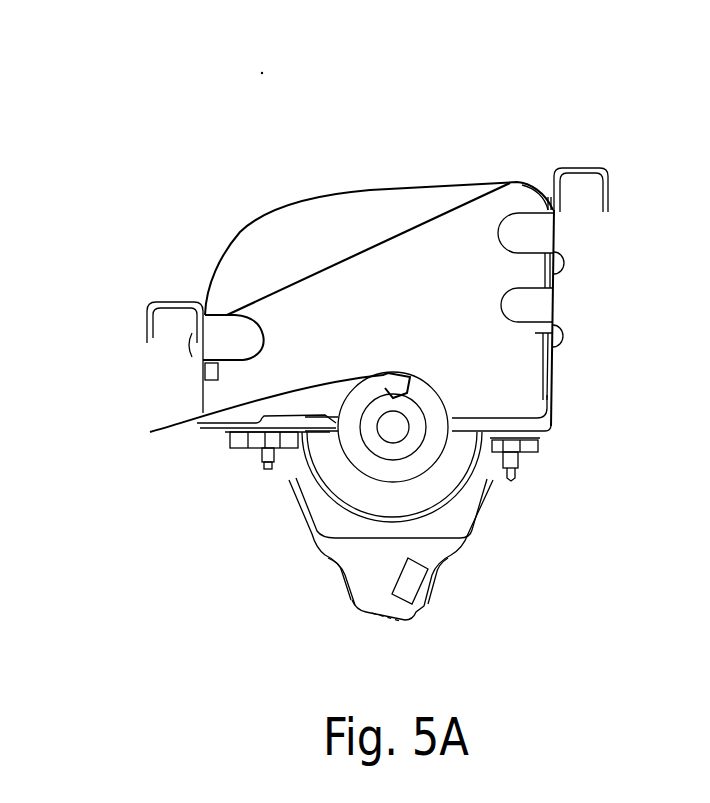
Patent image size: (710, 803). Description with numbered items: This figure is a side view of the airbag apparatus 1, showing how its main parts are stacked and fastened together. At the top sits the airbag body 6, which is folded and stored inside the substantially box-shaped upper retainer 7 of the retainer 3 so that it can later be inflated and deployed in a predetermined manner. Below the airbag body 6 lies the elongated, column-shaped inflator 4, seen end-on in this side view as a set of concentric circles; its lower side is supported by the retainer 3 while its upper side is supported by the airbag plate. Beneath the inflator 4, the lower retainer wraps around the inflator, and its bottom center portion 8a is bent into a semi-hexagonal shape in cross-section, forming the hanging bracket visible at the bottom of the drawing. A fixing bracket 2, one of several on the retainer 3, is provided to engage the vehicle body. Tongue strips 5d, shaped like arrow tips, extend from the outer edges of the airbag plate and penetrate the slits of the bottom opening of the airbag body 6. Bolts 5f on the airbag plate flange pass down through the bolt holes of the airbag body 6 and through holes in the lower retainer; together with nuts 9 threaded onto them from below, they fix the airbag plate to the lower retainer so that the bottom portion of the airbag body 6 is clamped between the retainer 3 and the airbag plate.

The airbag apparatus 1 is at (522, 152).
The fixing bracket 2 is at (423, 600).
The retainer 3 is at (575, 411).
The inflator 4 is at (362, 462).
The tongue strip 5d is at (258, 414).
The bolt 5f is at (275, 440).
The airbag body 6 is at (312, 216).
The upper retainer 7 is at (532, 395).
The bottom center portion 8a is at (338, 562).
The nut 9 is at (248, 451).